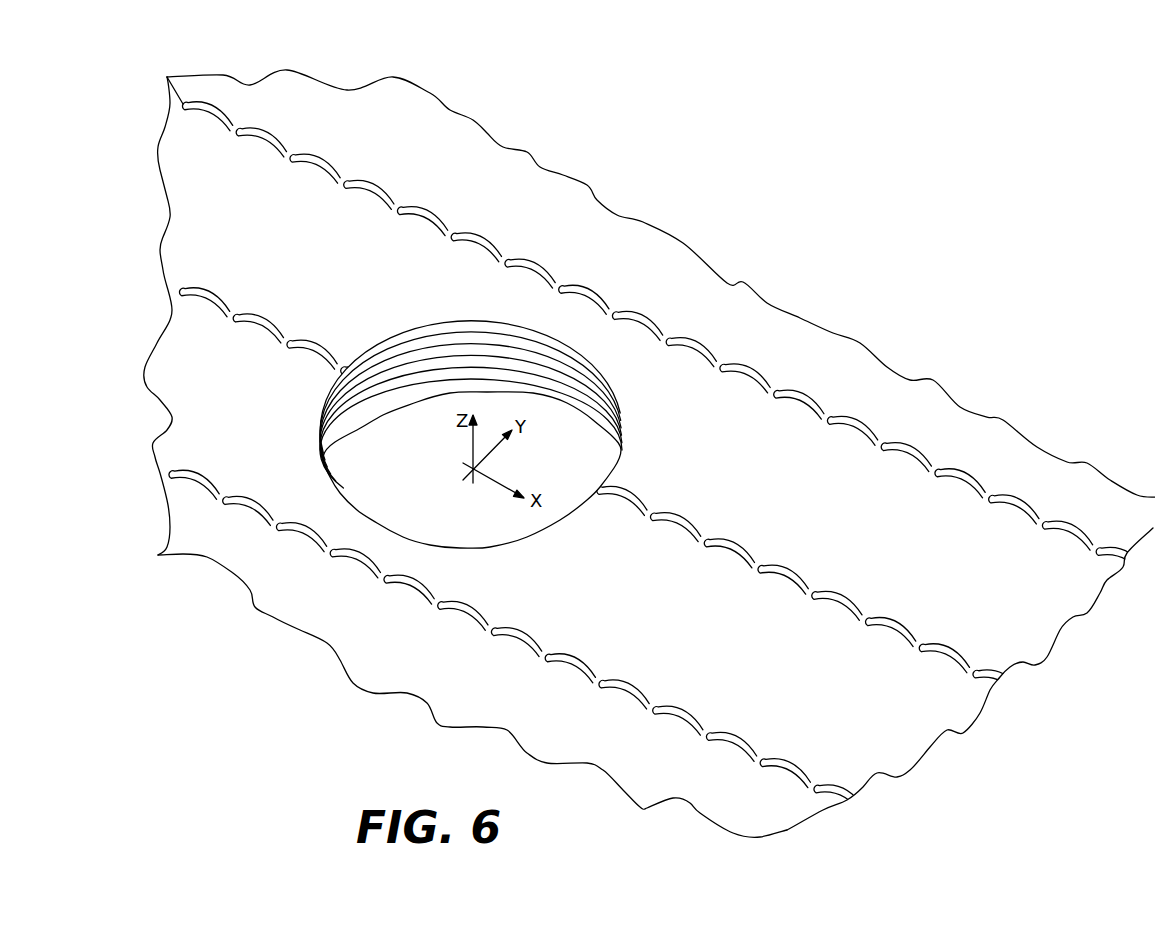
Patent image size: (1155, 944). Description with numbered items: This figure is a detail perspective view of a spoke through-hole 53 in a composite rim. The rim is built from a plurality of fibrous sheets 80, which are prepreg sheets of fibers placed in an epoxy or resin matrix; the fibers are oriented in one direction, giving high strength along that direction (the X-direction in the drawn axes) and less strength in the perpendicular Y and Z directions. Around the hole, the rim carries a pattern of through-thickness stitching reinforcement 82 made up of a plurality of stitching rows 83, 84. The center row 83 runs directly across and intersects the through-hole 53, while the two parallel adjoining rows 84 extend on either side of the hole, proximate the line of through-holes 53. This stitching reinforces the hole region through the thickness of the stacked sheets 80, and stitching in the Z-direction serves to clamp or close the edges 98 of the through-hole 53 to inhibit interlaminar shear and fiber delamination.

The through-thickness stitching reinforcement 82 is at (733, 317).
The parallel adjoining stitching rows 84 is at (863, 417).
The center stitching row 83 is at (745, 557).
The fibrous sheets 80 is at (484, 403).
The edges of through-holes 98 is at (542, 325).
The spoke through-hole 53 is at (460, 522).